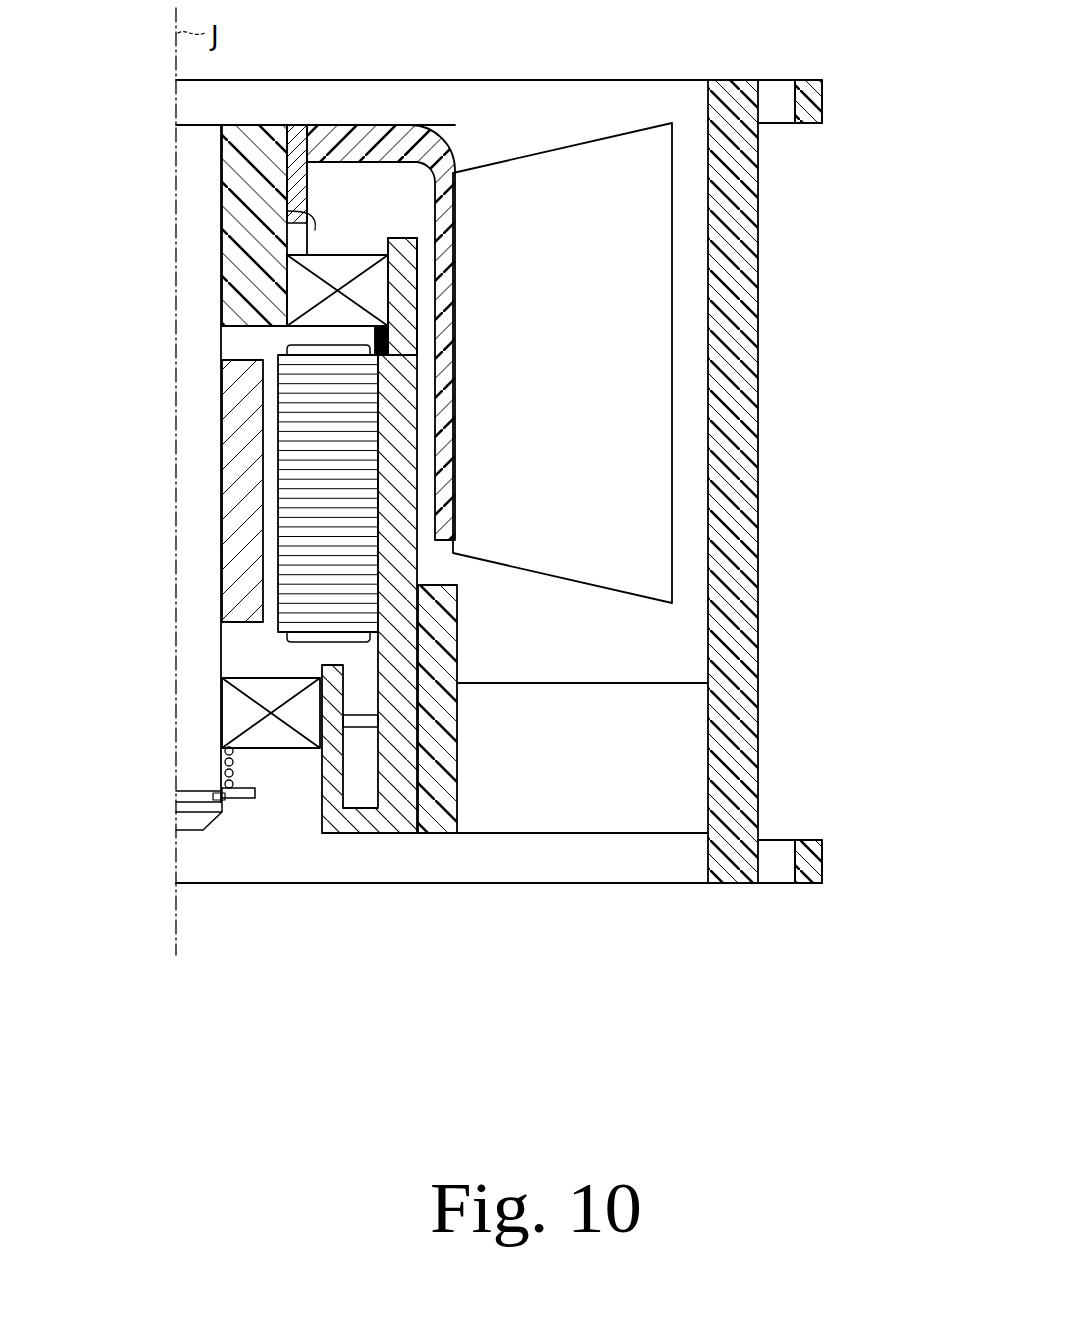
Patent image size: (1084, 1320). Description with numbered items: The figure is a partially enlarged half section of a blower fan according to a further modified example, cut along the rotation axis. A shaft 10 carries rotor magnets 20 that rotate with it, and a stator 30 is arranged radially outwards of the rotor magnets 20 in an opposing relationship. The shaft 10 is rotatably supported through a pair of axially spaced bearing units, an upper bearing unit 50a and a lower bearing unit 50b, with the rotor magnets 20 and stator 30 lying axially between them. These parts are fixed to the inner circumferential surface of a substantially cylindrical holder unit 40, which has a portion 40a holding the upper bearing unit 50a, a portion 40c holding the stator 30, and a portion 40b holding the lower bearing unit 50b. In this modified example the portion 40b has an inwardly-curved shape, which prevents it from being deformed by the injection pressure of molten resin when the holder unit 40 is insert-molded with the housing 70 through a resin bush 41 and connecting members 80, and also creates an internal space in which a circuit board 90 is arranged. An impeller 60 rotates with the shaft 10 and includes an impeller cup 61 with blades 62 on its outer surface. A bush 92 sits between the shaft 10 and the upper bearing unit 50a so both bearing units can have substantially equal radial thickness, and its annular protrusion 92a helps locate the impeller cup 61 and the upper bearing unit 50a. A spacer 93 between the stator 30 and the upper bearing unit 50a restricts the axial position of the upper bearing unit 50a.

The shaft 10 is at (205, 155).
The rotor magnets 20 is at (240, 456).
The stator 30 is at (320, 530).
The holder unit 40 is at (604, 535).
The portion of the holder unit arranged to hold the upper bearing unit 40a is at (405, 285).
The portion of the holder unit arranged to hold the lower bearing unit 40b is at (333, 707).
The portion of the holder unit arranged to hold the stator 40c is at (398, 467).
The resin bush 41 is at (447, 787).
The upper bearing unit 50a is at (340, 268).
The lower bearing unit 50b is at (275, 738).
The impeller 60 is at (489, 301).
The impeller cup 61 is at (420, 128).
The blades 62 is at (507, 183).
The housing 70 is at (735, 256).
The connecting members 80 is at (627, 785).
The circuit board 90 is at (360, 722).
The bush 92 is at (237, 257).
The annular protrusion 92a is at (287, 211).
The spacer 93 is at (377, 334).